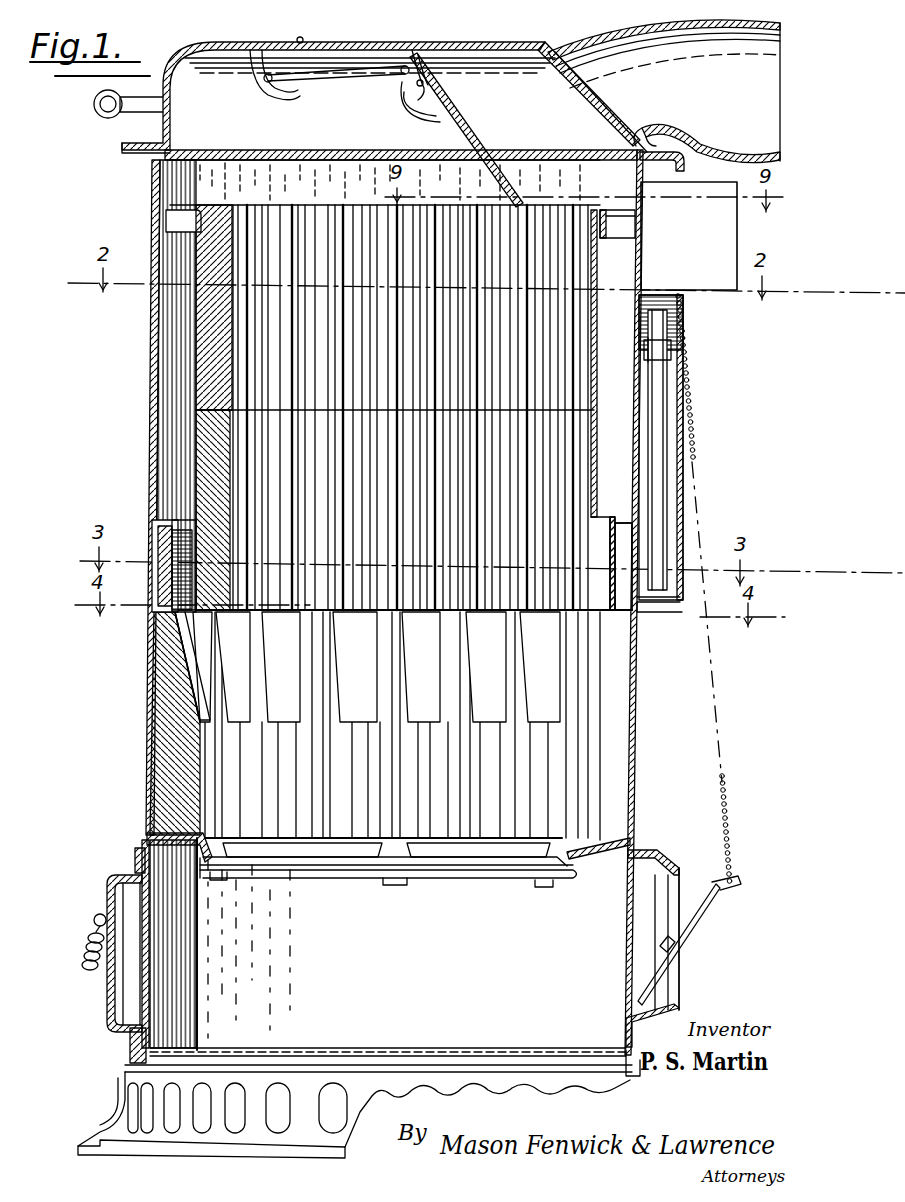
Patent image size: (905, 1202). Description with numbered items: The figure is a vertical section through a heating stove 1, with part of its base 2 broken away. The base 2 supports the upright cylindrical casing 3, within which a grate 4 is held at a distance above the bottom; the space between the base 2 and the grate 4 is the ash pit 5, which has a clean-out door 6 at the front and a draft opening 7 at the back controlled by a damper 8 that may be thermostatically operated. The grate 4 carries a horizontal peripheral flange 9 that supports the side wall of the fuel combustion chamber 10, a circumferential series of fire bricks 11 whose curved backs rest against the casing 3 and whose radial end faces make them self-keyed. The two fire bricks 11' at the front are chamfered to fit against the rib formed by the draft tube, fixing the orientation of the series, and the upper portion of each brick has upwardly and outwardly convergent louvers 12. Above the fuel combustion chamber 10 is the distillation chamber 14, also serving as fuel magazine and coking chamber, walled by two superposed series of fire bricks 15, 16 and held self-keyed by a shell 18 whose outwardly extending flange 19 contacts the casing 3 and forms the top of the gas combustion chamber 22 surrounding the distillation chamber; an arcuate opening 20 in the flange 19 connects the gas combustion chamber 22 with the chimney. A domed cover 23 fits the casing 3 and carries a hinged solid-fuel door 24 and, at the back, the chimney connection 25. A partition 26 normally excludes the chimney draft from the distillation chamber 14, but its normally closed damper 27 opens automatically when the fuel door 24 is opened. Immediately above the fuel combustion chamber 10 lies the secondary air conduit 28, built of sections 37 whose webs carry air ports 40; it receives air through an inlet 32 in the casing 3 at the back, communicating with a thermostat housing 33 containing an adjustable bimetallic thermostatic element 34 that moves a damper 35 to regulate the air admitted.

The stove 1 is at (144, 440).
The base 2 is at (122, 1093).
The casing 3 is at (148, 685).
The grate 4 is at (580, 866).
The ash pit 5 is at (232, 1014).
The clean-out door 6 is at (114, 888).
The draft opening 7 is at (672, 905).
The damper 8 is at (704, 912).
The horizontal peripheral flange 9 is at (600, 842).
The fuel combustion chamber 10 is at (222, 790).
The fire bricks 11 is at (635, 726).
The fire bricks adjacent the rib 11' is at (143, 723).
The louvers 12 is at (186, 640).
The distillation chamber 14 is at (258, 350).
The fire bricks 15 is at (205, 473).
The fire bricks 16 is at (205, 325).
The shell 18 is at (190, 300).
The outwardly extending flange 19 is at (166, 203).
The arcuate opening 20 is at (614, 214).
The gas combustion chamber 22 is at (605, 510).
The domed cover 23 is at (356, 48).
The solid-fuel door 24 is at (212, 57).
The chimney connection 25 is at (608, 52).
The partition 26 is at (524, 197).
The damper 27 is at (472, 124).
The secondary air conduit 28 is at (165, 536).
The air inlet 32 is at (640, 558).
The thermostat housing 33 is at (680, 400).
The thermostatic element 34 is at (658, 430).
The damper 35 is at (650, 606).
The section 37 is at (180, 615).
The air ports 40 is at (172, 568).